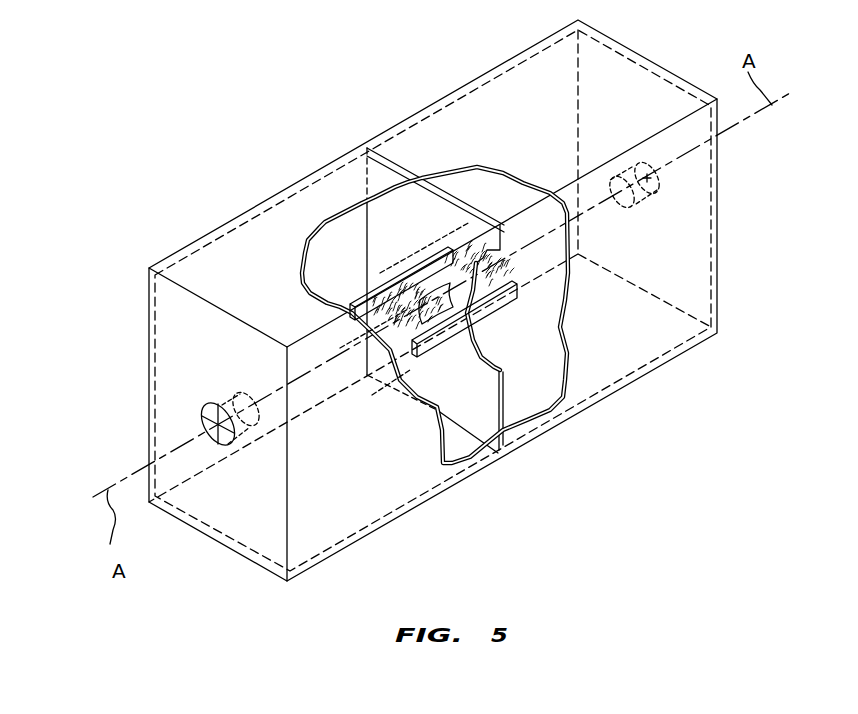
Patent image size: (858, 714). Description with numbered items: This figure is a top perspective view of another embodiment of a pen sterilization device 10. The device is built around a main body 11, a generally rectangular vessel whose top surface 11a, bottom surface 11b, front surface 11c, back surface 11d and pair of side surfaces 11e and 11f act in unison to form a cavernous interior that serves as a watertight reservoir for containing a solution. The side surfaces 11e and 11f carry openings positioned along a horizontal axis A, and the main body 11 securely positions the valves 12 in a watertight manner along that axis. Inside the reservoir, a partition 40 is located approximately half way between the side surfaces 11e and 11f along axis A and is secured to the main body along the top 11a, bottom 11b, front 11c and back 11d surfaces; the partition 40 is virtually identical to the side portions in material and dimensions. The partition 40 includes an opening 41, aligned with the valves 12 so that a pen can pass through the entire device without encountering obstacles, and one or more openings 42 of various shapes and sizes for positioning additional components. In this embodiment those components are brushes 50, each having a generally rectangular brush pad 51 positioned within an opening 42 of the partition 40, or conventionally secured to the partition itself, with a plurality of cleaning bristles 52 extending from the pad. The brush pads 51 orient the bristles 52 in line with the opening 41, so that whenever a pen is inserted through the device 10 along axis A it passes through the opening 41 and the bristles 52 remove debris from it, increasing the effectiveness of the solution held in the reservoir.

The pen sterilization device 10 is at (218, 128).
The main body 11 is at (485, 62).
The top surface 11a is at (553, 124).
The bottom surface 11b is at (620, 380).
The front surface 11c is at (370, 495).
The back surface 11d is at (236, 265).
The side surface 11e is at (228, 374).
The side surface 11f is at (690, 236).
The valve 12 is at (202, 417).
The partition 40 is at (443, 237).
The opening 41 is at (437, 332).
The opening 42 is at (407, 275).
The brush 50 is at (470, 319).
The brush pad 51 is at (354, 305).
The cleaning bristle 52 is at (395, 331).